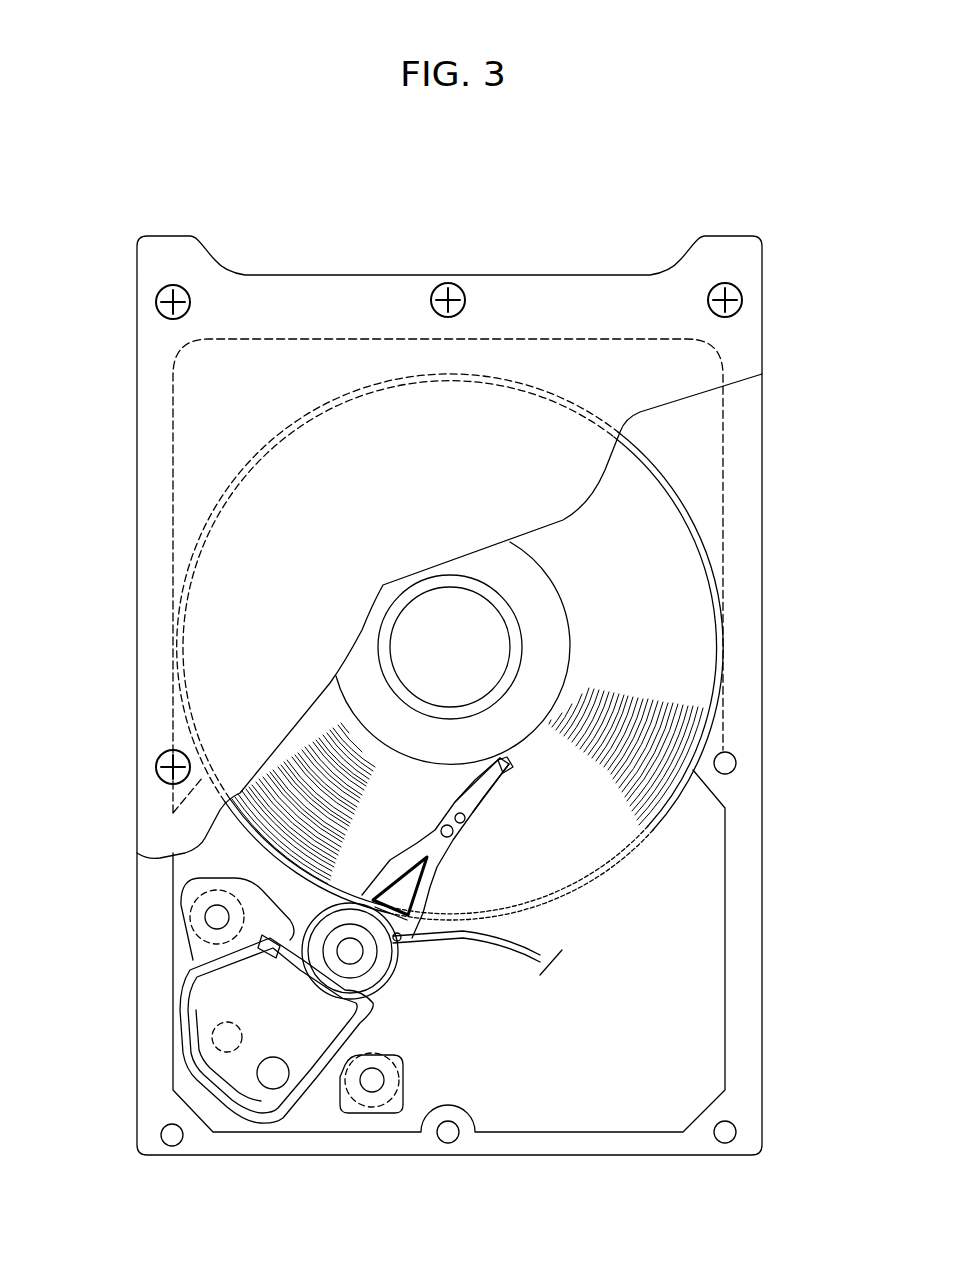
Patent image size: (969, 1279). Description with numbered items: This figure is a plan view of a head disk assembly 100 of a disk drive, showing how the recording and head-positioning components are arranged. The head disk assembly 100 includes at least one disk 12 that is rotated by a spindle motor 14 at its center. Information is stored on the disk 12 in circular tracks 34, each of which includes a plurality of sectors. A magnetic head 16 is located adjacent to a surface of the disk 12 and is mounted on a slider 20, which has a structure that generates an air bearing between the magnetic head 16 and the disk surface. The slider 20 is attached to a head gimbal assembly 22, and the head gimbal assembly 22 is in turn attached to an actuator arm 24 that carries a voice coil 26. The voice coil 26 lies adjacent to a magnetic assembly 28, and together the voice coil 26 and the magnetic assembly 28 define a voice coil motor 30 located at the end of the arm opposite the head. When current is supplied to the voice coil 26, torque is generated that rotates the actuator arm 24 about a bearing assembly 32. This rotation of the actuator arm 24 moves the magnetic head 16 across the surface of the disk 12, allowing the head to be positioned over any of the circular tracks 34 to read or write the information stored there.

The head disk assembly 100 is at (590, 222).
The disk 12 is at (683, 584).
The spindle motor 14 is at (428, 626).
The magnetic head 16 is at (508, 769).
The slider 20 is at (514, 767).
The head gimbal assembly 22 is at (485, 797).
The actuator arm 24 is at (270, 970).
The voice coil 26 is at (203, 1032).
The magnetic assembly 28 is at (215, 981).
The voice coil motor 30 is at (323, 1093).
The bearing assembly 32 is at (363, 963).
The circular tracks 34 is at (315, 757).